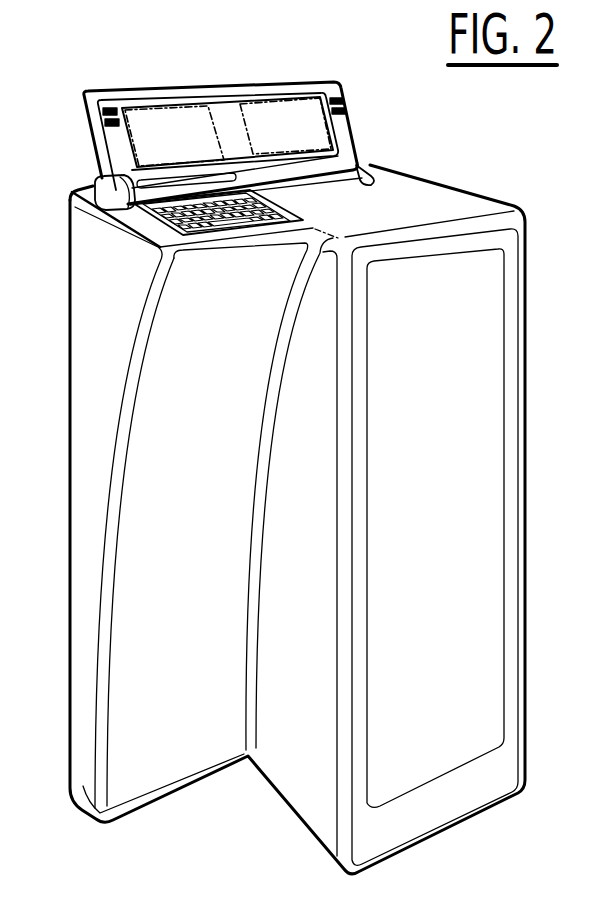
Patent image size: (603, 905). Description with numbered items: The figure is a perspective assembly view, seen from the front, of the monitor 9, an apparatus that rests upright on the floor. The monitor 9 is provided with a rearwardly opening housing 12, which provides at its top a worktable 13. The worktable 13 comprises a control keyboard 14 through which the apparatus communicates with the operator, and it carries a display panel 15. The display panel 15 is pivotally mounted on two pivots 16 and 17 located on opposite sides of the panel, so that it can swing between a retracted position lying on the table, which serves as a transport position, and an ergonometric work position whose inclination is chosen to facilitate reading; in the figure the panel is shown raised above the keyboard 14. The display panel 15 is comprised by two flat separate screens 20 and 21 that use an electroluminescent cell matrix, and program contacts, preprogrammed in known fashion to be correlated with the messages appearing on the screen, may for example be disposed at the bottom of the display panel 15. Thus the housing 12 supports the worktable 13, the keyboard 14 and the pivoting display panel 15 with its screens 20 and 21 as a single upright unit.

The monitor 9 is at (302, 446).
The housing 12 is at (507, 622).
The worktable 13 is at (400, 226).
The control keyboard 14 is at (207, 213).
The display panel 15 is at (221, 111).
The pivot 16 is at (93, 183).
The pivot 17 is at (362, 164).
The flat screen 20 is at (153, 123).
The flat screen 21 is at (302, 122).